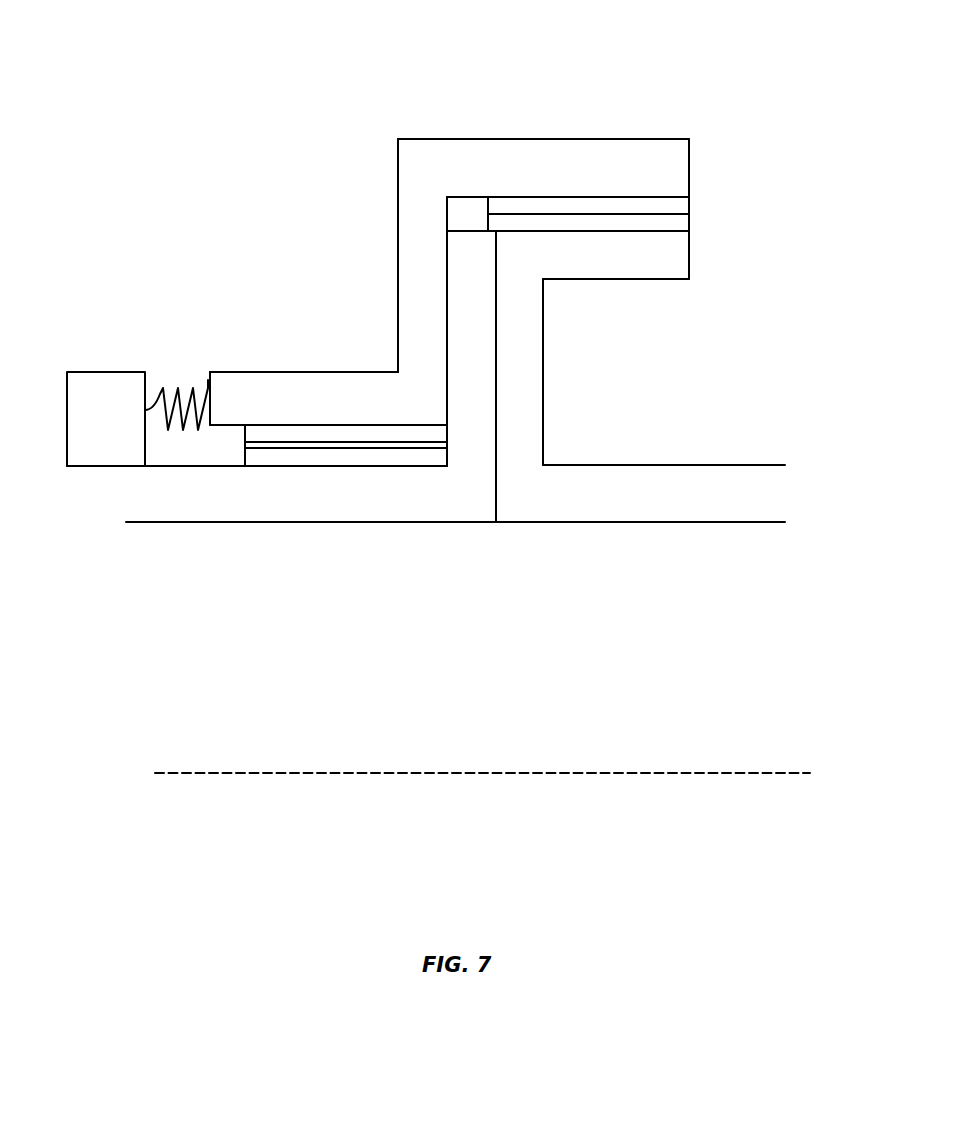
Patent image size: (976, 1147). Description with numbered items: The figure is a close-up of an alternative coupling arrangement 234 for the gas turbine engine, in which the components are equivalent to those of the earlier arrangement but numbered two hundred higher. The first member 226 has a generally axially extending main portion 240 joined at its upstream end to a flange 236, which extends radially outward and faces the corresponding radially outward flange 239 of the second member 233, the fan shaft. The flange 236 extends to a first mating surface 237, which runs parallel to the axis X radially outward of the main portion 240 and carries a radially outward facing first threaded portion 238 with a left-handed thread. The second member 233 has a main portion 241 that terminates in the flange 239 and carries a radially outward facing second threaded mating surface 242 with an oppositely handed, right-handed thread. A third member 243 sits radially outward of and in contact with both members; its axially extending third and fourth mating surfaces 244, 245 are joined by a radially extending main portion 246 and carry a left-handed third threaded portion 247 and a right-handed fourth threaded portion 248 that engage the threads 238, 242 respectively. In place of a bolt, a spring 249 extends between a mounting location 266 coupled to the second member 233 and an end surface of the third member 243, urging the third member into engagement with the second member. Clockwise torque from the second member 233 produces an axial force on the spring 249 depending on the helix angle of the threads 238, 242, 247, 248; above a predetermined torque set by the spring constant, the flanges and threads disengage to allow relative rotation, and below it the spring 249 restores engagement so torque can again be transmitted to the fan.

The first member 226 is at (688, 512).
The second member (fan shaft) 233 is at (210, 510).
The coupling arrangement 234 is at (502, 645).
The flange 236 is at (530, 388).
The first mating surface 237 is at (638, 237).
The first threaded portion 238 is at (690, 222).
The flange of second member 239 is at (475, 265).
The main portion of first member 240 is at (608, 467).
The main portion of second member 241 is at (287, 487).
The second threaded mating surface 242 is at (327, 457).
The third member 243 is at (415, 272).
The third mating surface 244 is at (543, 167).
The fourth mating surface 245 is at (327, 415).
The main portion of third member 246 is at (410, 230).
The third threaded portion 247 is at (689, 205).
The fourth threaded portion 248 is at (425, 428).
The spring 249 is at (205, 386).
The mounting location 266 is at (63, 418).
The axis X is at (248, 773).